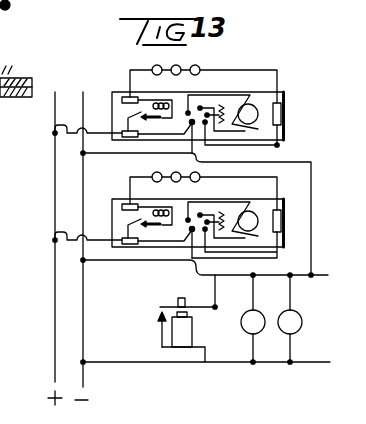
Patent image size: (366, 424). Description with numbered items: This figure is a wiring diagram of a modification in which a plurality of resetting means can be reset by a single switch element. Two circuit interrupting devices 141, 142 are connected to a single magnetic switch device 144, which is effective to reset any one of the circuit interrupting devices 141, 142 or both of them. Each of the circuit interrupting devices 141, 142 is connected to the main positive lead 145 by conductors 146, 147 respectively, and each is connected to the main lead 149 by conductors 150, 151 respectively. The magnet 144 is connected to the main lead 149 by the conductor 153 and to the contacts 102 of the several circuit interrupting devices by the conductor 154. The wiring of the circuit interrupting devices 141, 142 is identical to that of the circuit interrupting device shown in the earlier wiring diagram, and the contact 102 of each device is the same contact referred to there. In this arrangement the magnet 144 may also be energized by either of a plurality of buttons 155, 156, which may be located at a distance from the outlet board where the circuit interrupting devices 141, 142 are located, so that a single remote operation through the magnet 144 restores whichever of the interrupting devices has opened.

The contact 102 is at (189, 127).
The circuit interrupting device 141 is at (286, 117).
The circuit interrupting device 142 is at (261, 199).
The magnetic switch device 144 is at (188, 330).
The main positive lead 145 is at (55, 186).
The conductor 146 is at (55, 130).
The conductor 147 is at (55, 237).
The main lead 149 is at (83, 330).
The conductor 150 is at (93, 156).
The conductor 151 is at (97, 263).
The conductor 153 is at (113, 364).
The conductor 154 is at (215, 283).
The button 155 is at (268, 302).
The button 156 is at (302, 327).